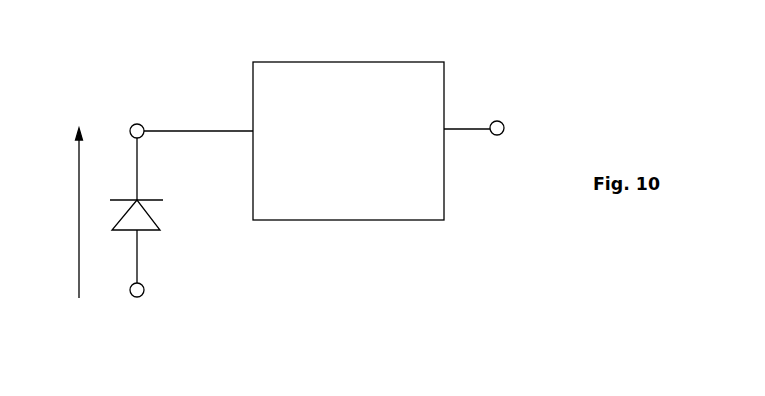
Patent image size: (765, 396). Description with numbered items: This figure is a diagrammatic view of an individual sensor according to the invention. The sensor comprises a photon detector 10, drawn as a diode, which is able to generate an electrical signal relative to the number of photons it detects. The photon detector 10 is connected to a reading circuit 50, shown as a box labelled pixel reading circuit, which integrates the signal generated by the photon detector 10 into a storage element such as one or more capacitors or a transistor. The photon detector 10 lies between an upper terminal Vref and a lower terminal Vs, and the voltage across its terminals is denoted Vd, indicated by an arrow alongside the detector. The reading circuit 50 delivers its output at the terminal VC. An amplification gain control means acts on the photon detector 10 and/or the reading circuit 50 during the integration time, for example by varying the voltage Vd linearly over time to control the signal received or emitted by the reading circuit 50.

The photon detector 10 is at (149, 210).
The reading circuit 50 is at (312, 175).
The voltage across the photon detector Vd is at (65, 213).
The terminal Vref is at (191, 109).
The source voltage node Vs is at (159, 295).
The output voltage node VC is at (481, 100).